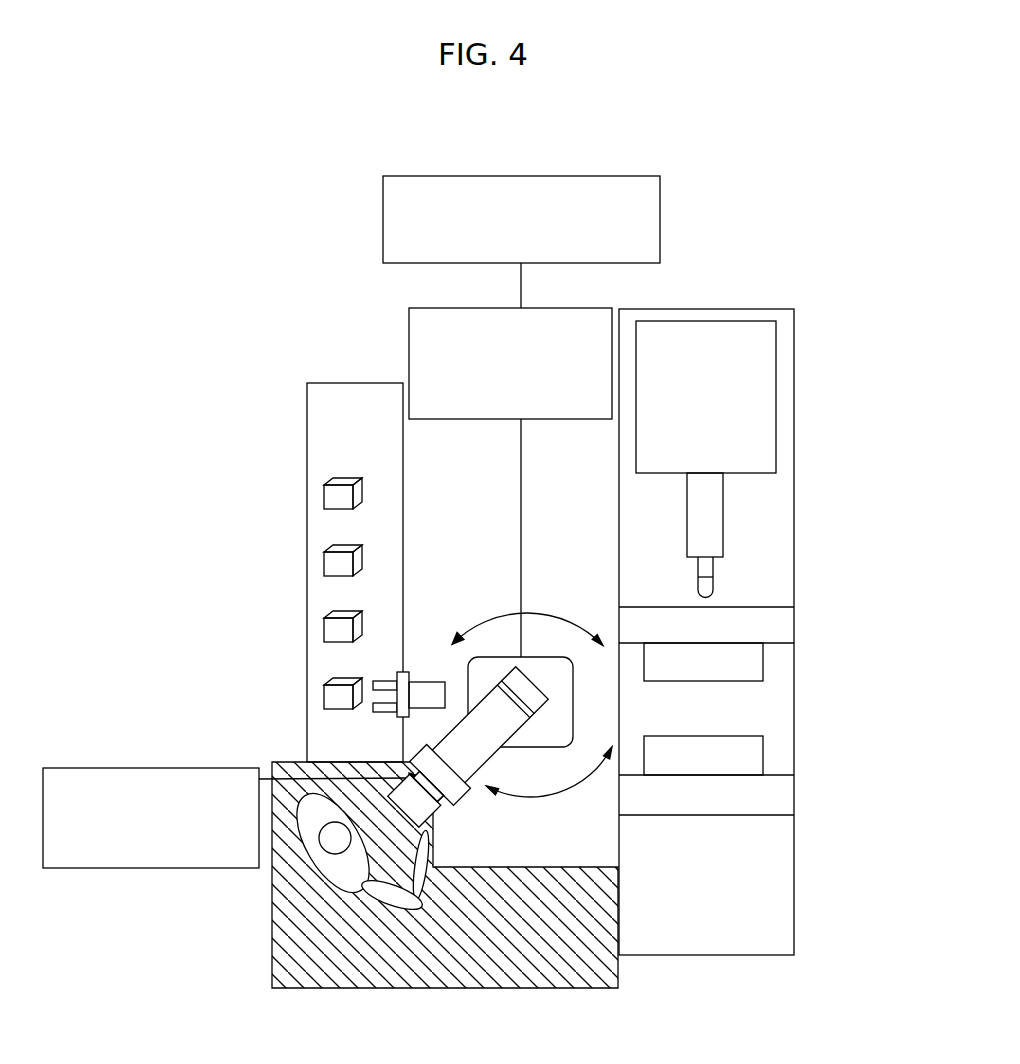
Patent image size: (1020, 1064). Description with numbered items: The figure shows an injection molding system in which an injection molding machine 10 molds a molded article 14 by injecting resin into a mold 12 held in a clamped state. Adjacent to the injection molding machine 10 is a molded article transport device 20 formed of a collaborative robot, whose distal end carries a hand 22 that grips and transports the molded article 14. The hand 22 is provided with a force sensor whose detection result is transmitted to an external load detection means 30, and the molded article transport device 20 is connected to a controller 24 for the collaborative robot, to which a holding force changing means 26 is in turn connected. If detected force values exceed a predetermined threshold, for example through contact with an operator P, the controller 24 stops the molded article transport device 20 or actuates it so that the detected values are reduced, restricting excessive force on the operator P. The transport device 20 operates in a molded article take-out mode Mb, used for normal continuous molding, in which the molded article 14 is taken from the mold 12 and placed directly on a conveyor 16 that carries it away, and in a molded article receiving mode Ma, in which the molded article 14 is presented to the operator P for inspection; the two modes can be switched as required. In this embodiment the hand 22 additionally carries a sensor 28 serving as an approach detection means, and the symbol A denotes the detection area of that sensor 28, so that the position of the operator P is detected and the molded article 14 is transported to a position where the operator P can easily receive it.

The injection molding machine 10 is at (767, 392).
The mold 12 is at (738, 753).
The molded article 14 is at (332, 628).
The conveyor 16 is at (345, 732).
The molded article transport device 20 is at (510, 748).
The hand 22 is at (442, 817).
The controller for the collaborative robot 24 is at (410, 331).
The holding force changing means 26 is at (662, 222).
The sensor 28 is at (452, 803).
The external load detection means 30 is at (167, 868).
The detection area A is at (482, 988).
The operator P is at (323, 881).
The molded article receiving mode Ma is at (557, 800).
The molded article take-out mode Mb is at (550, 613).